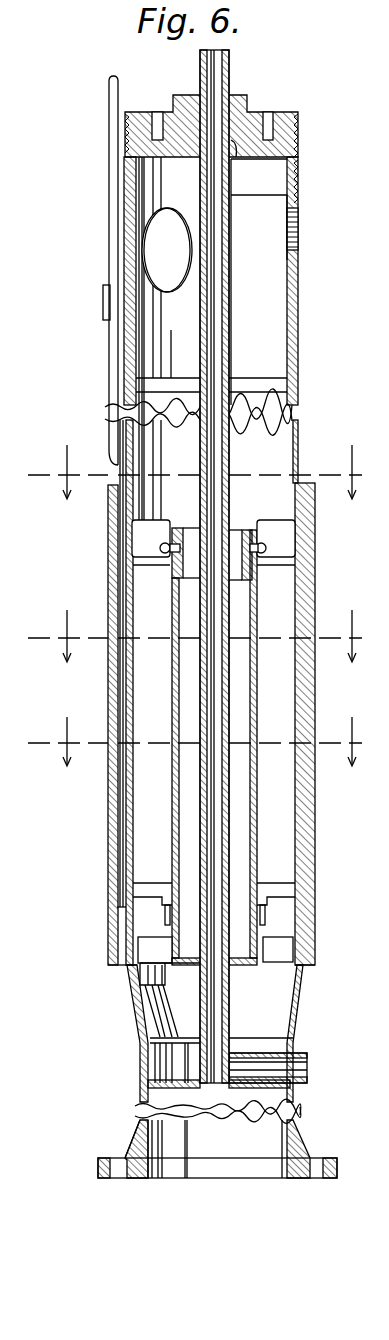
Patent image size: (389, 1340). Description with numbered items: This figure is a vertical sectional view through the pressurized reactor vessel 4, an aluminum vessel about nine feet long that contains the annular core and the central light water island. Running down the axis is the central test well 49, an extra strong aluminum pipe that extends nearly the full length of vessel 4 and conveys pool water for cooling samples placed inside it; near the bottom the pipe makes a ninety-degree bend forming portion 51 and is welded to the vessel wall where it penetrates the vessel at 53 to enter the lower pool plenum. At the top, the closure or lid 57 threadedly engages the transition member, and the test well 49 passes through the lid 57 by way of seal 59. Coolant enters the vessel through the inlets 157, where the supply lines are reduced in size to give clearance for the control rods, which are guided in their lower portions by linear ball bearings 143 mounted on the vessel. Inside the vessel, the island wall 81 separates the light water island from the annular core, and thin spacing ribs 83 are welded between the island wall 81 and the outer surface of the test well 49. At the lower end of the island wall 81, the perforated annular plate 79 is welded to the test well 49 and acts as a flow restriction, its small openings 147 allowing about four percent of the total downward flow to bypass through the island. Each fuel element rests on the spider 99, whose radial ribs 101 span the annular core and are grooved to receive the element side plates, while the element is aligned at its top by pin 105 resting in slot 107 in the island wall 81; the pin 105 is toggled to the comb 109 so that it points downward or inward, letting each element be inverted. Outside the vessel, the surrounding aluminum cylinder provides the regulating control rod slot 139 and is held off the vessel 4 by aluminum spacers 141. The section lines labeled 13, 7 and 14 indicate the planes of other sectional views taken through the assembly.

The pressurized reactor vessel 4 is at (293, 357).
The central test well 49 is at (216, 80).
The closure or lid 57 is at (283, 114).
The seal 59 is at (238, 150).
The inlets 157 is at (293, 272).
The linear ball bearings 143 is at (108, 306).
The section line 13- 13 is at (195, 488).
The section line 7- 7 is at (195, 652).
The section line 14- 14 is at (195, 756).
The spacing ribs 83 is at (235, 535).
The island wall 81 is at (246, 538).
The slot 107 is at (160, 549).
The pin 105 is at (268, 550).
The comb 109 is at (150, 568).
The regulating control rod slot 139 is at (123, 866).
The aluminum spacers 141 is at (307, 882).
The radial ribs 101 is at (151, 950).
The spider 99 is at (283, 932).
The small openings 147 is at (182, 964).
The perforated annular plate 79 is at (243, 966).
The portion 51 is at (305, 1053).
The penetration point 53 is at (307, 1069).